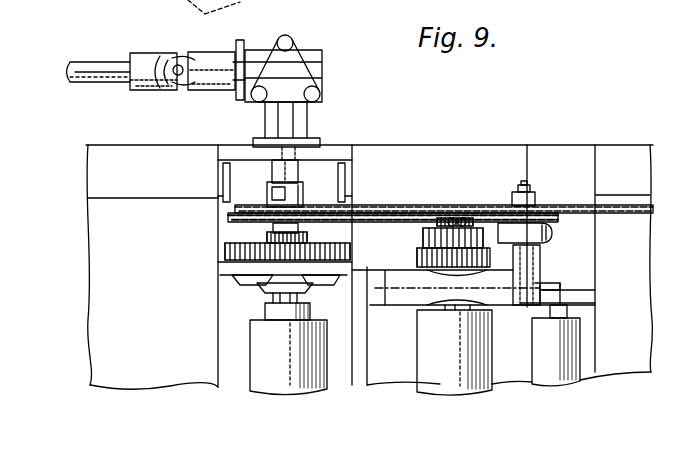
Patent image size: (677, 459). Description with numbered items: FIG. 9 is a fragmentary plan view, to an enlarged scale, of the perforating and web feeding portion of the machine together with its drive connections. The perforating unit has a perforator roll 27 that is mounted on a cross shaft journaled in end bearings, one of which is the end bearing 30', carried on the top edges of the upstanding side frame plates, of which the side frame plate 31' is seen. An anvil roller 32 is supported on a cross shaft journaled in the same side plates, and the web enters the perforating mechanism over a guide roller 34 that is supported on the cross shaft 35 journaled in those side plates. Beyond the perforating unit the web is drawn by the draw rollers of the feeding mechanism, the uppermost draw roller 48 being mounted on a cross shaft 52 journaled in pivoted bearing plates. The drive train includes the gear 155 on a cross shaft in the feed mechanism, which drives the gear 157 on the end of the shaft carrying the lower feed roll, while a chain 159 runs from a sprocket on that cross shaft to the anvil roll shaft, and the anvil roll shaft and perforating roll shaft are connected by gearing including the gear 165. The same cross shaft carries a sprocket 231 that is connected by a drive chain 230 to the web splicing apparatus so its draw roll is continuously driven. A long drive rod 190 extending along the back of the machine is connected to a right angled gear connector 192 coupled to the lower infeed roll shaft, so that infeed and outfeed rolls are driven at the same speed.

The long drive rod 190 is at (108, 66).
The right angled gear connector 192 is at (291, 66).
The sprocket 231 is at (316, 212).
The drive chain 230 is at (478, 207).
The gear 157 is at (250, 240).
The gear 155 is at (223, 252).
The chain 159 is at (362, 223).
The gear 165 is at (418, 256).
The cross shaft 52 is at (277, 296).
The draw roller 48 is at (260, 358).
The end bearing 30' is at (481, 303).
The side frame plate 31' is at (558, 278).
The anvil roller 32 is at (420, 364).
The perforator roll 27 is at (466, 334).
The cross shaft 35 is at (567, 313).
The guide roller 34 is at (582, 348).